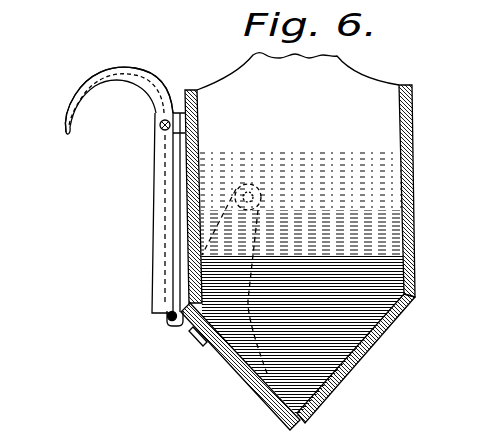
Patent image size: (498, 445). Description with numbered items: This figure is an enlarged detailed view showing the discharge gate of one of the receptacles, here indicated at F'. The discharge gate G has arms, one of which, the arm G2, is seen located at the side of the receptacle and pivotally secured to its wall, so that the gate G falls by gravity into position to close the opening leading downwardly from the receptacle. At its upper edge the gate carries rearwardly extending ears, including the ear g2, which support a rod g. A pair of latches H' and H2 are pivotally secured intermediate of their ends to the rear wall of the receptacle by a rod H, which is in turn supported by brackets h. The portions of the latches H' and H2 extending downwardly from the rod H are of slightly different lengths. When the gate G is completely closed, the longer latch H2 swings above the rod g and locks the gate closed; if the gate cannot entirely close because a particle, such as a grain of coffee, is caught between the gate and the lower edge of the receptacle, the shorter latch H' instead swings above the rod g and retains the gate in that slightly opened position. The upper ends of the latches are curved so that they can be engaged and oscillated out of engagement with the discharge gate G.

The receptacle wall F' is at (319, 244).
The discharge gate G is at (245, 376).
The arm G2 is at (197, 345).
The rod g is at (165, 320).
The ear g2 is at (182, 323).
The bracket h is at (180, 115).
The rod H is at (132, 141).
The latch H' is at (101, 188).
The latch H2 is at (107, 67).